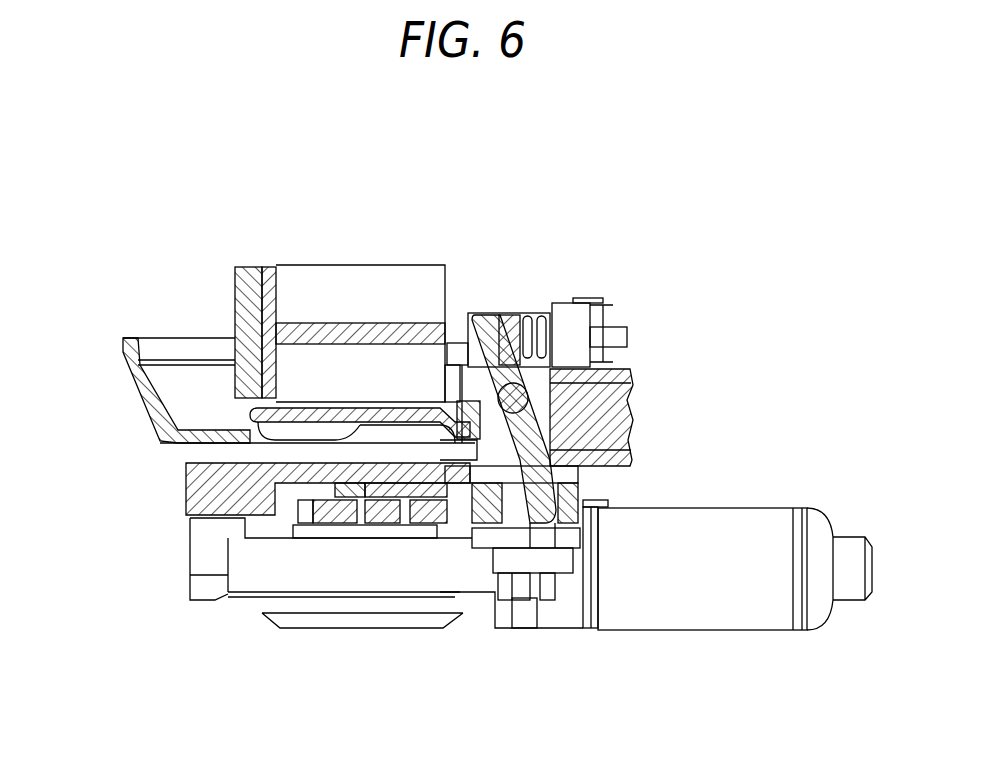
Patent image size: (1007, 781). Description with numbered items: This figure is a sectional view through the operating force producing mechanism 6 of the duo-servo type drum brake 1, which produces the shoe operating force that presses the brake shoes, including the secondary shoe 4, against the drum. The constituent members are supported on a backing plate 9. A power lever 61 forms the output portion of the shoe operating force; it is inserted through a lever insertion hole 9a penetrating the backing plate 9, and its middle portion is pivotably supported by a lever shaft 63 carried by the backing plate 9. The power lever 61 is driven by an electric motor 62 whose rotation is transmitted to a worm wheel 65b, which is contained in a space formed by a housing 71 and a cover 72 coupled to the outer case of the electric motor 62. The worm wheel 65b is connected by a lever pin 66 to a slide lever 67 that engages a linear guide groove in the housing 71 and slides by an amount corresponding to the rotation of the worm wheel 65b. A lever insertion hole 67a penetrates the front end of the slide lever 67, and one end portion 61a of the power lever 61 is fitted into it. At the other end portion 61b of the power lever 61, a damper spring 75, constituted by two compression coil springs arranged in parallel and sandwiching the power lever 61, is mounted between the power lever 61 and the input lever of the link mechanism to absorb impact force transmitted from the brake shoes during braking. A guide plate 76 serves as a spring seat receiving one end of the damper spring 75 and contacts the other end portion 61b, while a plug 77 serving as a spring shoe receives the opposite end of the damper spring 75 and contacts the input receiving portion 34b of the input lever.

The drum brake 1 is at (150, 314).
The secondary shoe 4 is at (232, 283).
The operating force producing mechanism 6 is at (724, 496).
The backing plate 9 is at (137, 403).
The lever insertion hole 9a is at (600, 468).
The input receiving portion 34b is at (625, 337).
The power lever 61 is at (477, 317).
The one end portion of the power lever 61a is at (538, 512).
The other end portion of the power lever 61b is at (490, 318).
The electric motor 62 is at (667, 612).
The lever shaft 63 is at (635, 420).
The worm wheel 65b is at (333, 525).
The lever pin 66 is at (374, 506).
The slide lever 67 is at (480, 544).
The lever insertion hole 67a is at (520, 520).
The housing 71 is at (190, 484).
The cover 72 is at (205, 552).
The damper spring 75 is at (536, 320).
The guide plate 76 is at (512, 317).
The plug 77 is at (572, 318).